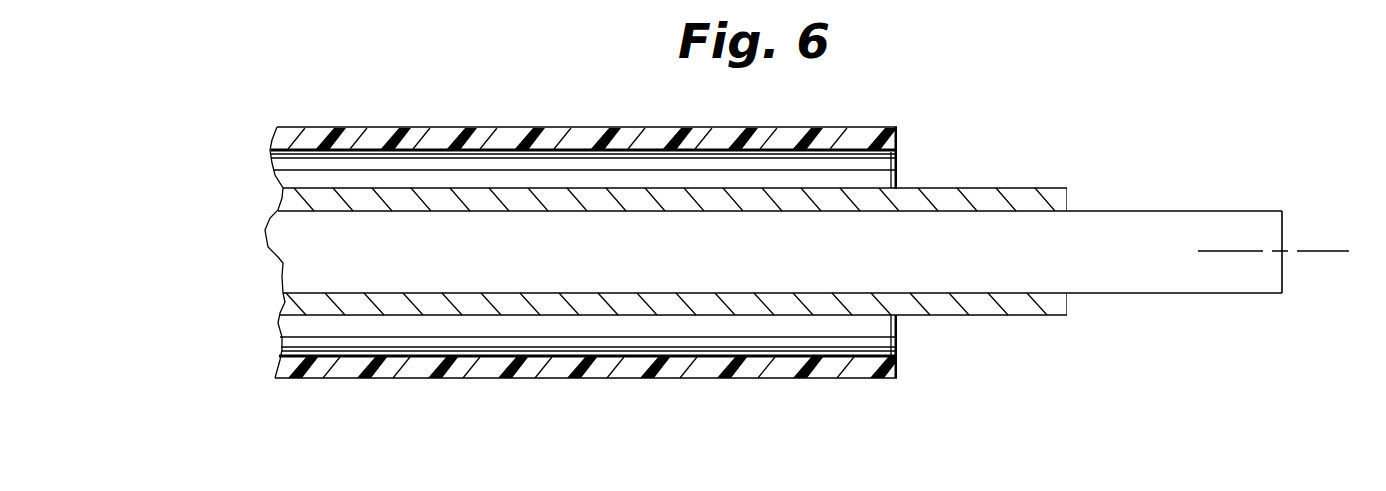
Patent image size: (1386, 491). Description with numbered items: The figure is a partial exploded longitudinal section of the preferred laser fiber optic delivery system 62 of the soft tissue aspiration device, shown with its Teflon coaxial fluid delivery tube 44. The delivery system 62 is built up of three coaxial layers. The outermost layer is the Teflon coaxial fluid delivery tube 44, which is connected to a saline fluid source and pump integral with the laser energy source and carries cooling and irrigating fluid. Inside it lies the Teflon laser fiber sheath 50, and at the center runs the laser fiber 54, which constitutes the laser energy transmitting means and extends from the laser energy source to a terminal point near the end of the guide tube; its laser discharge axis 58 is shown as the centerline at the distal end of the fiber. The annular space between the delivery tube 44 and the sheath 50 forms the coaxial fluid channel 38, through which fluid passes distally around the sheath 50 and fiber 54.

The coaxial fluid channel 38 is at (625, 178).
The Teflon coaxial fluid delivery tube 44 is at (843, 128).
The Teflon laser fiber sheath 50 is at (987, 188).
The laser fiber 54 is at (1154, 211).
The laser discharge axis 58 is at (1315, 250).
The laser fiber optic delivery system 62 is at (541, 406).